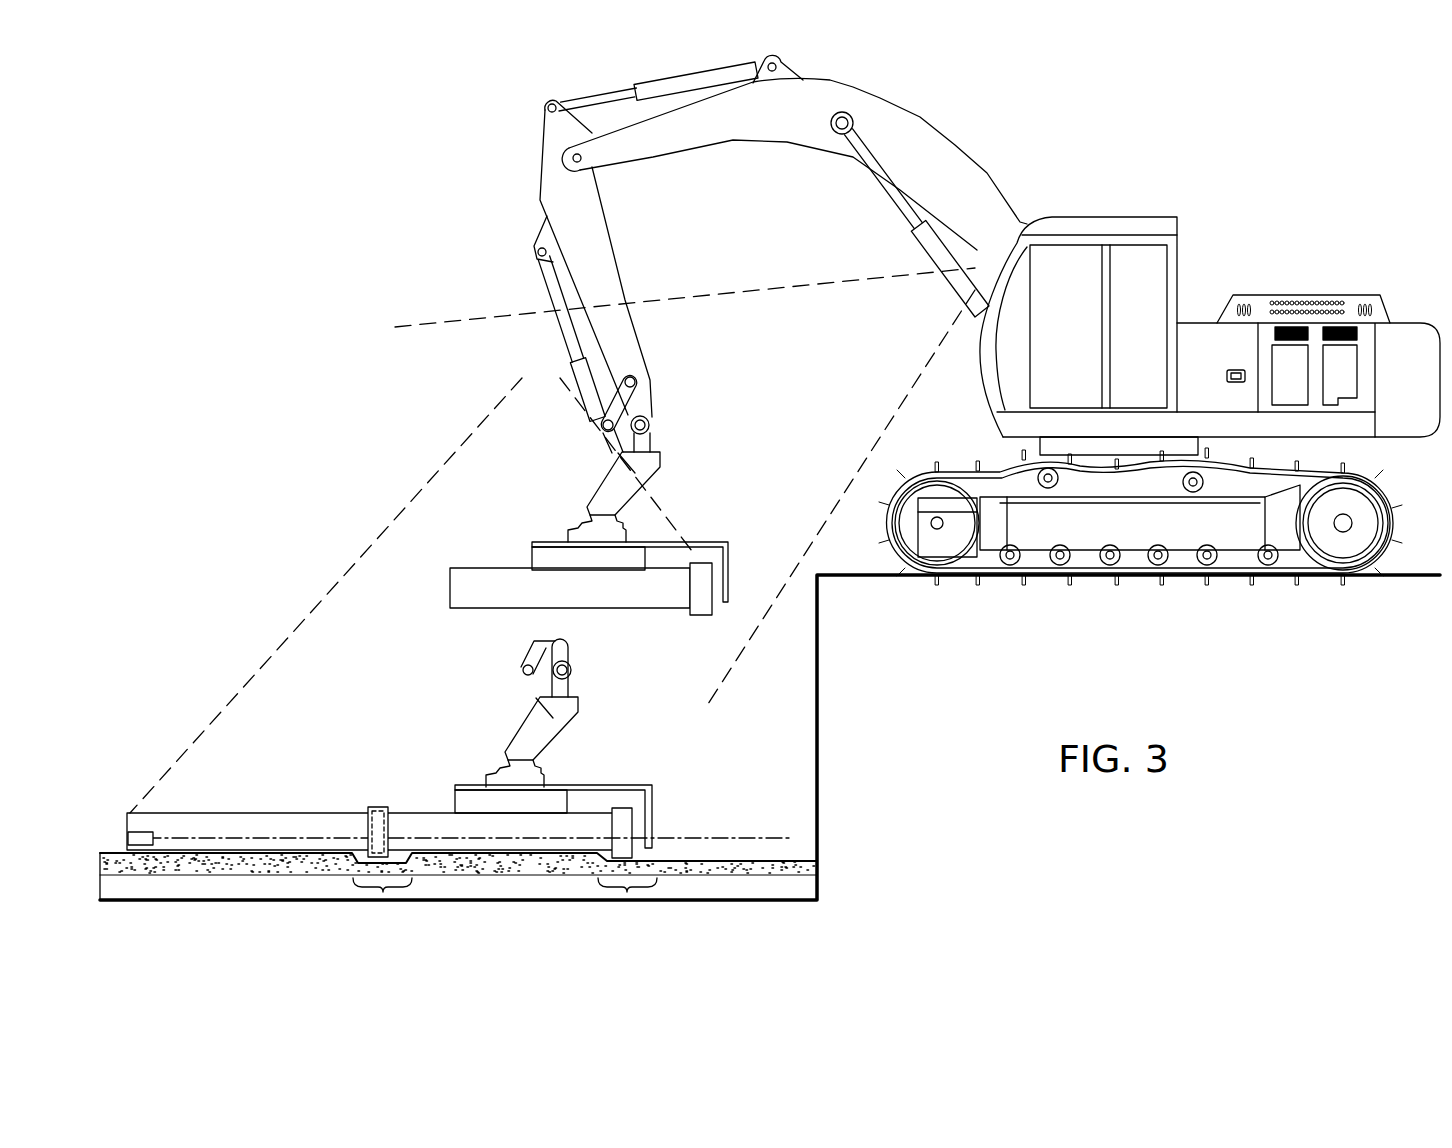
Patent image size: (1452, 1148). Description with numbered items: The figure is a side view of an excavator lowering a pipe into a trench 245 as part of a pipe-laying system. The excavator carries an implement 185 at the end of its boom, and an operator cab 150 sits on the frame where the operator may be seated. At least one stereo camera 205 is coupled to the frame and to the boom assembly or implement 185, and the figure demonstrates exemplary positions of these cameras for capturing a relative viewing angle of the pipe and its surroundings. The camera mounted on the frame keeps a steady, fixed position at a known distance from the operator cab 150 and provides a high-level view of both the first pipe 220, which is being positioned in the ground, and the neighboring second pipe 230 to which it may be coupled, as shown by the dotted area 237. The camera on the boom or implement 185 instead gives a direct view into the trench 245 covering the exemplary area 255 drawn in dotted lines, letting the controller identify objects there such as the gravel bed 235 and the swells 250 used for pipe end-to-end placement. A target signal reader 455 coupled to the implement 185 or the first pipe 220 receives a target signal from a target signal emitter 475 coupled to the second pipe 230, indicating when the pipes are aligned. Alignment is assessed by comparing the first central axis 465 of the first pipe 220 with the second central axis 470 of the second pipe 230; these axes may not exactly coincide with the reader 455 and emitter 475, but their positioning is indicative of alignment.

The operator cab 150 is at (1077, 343).
The implement 185 is at (636, 518).
The stereo camera 205 is at (571, 371).
The first pipe 220 is at (480, 587).
The second pipe 230 is at (225, 800).
The gravel bed 235 is at (522, 870).
The dotted area 237 is at (843, 351).
The trench 245 is at (745, 752).
The swells 250 is at (383, 892).
The exemplary area 255 is at (513, 497).
The target signal reader 455 is at (740, 582).
The first central axis 465 is at (757, 834).
The second central axis 470 is at (308, 830).
The target signal emitter 475 is at (143, 832).